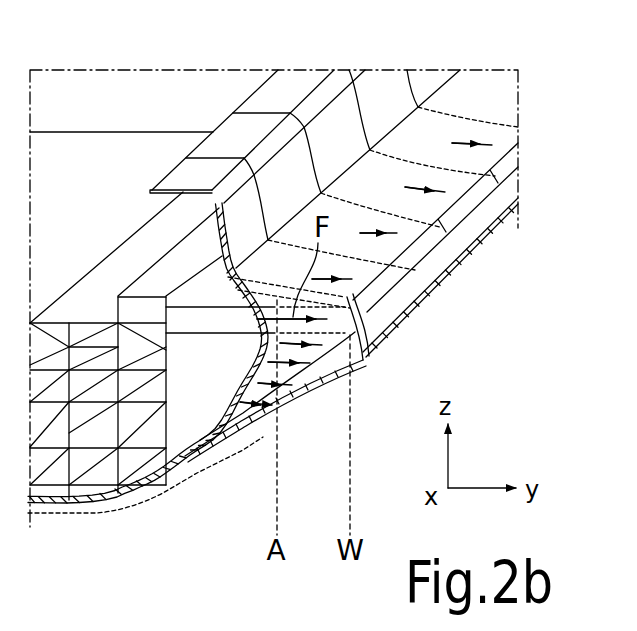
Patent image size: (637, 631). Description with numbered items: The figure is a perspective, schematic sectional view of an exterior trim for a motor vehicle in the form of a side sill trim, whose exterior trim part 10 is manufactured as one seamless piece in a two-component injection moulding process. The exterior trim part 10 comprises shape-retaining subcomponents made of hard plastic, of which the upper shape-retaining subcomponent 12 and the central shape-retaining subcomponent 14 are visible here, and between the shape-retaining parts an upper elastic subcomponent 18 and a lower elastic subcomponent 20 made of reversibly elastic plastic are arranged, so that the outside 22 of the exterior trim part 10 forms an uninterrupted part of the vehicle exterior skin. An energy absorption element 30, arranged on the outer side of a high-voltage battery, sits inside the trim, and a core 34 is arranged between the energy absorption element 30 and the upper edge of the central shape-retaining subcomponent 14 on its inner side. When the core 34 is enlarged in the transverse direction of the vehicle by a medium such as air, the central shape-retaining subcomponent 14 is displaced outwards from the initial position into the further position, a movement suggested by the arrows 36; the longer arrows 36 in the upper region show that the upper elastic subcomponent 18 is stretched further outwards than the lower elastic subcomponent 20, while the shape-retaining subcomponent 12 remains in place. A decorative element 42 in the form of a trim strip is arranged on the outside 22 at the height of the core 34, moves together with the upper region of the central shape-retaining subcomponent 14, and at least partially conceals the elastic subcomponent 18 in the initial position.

The exterior trim part 10 is at (547, 133).
The shape-retaining subcomponent 12 is at (295, 83).
The central shape-retaining subcomponent 14 is at (351, 360).
The elastic subcomponent 18 is at (283, 243).
The elastic subcomponent 20 is at (90, 518).
The outside 22 is at (328, 380).
The energy absorption element 30 is at (150, 458).
The core 34 is at (200, 295).
The arrows 36 is at (290, 387).
The decorative element 42 is at (416, 300).